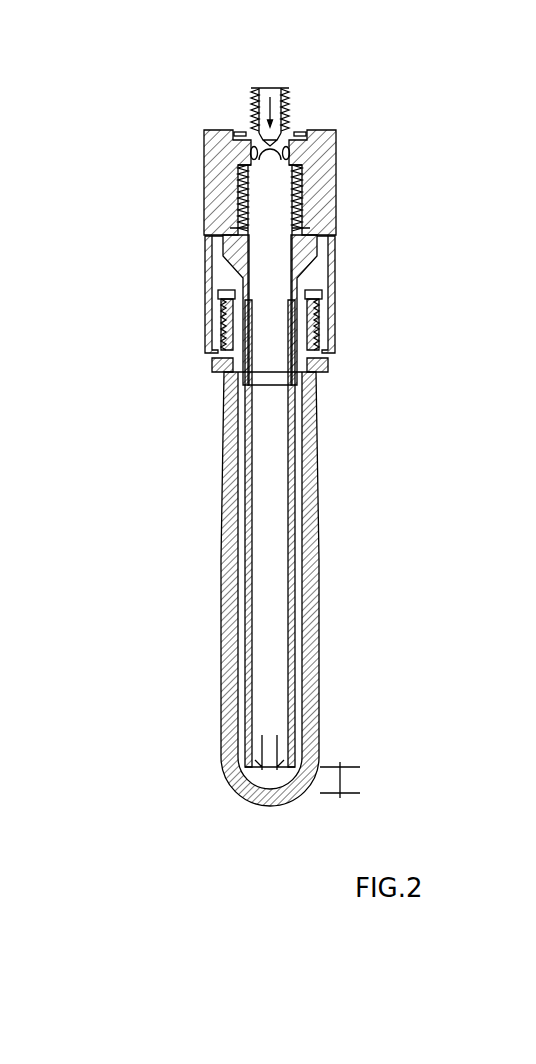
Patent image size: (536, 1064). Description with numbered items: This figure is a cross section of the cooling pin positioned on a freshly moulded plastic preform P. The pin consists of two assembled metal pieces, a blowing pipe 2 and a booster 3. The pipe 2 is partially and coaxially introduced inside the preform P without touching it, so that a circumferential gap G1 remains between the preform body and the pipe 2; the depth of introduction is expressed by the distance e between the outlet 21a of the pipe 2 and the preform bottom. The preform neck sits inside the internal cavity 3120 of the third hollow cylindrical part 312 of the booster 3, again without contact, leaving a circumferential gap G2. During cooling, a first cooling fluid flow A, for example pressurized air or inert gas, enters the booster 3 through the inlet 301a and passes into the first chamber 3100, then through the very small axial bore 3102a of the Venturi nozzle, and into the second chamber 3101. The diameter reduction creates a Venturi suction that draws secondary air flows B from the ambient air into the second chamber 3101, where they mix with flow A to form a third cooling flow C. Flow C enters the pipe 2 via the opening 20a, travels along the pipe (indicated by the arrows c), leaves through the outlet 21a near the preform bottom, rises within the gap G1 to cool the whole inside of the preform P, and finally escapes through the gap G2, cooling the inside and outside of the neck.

The blowing pipe 2 is at (244, 540).
The booster 3 is at (368, 242).
The opening in proximal end 20a is at (262, 168).
The opening in distal end 21a is at (263, 768).
The opening 301a is at (282, 88).
The third hollow cylindrical part 312 is at (202, 236).
The first chamber 3100 is at (284, 150).
The second chamber 3101 is at (337, 129).
The axial bore 3102a is at (252, 132).
The internal cavity 3120 is at (220, 265).
The first cooling fluid flow A is at (270, 55).
The secondary air flows B is at (182, 154).
The third cooling flow C is at (203, 360).
The flow direction c is at (270, 210).
The circumferential gap G1 is at (297, 545).
The circumferential gap G2 is at (323, 323).
The plastic preform P is at (342, 657).
The distance e is at (340, 780).